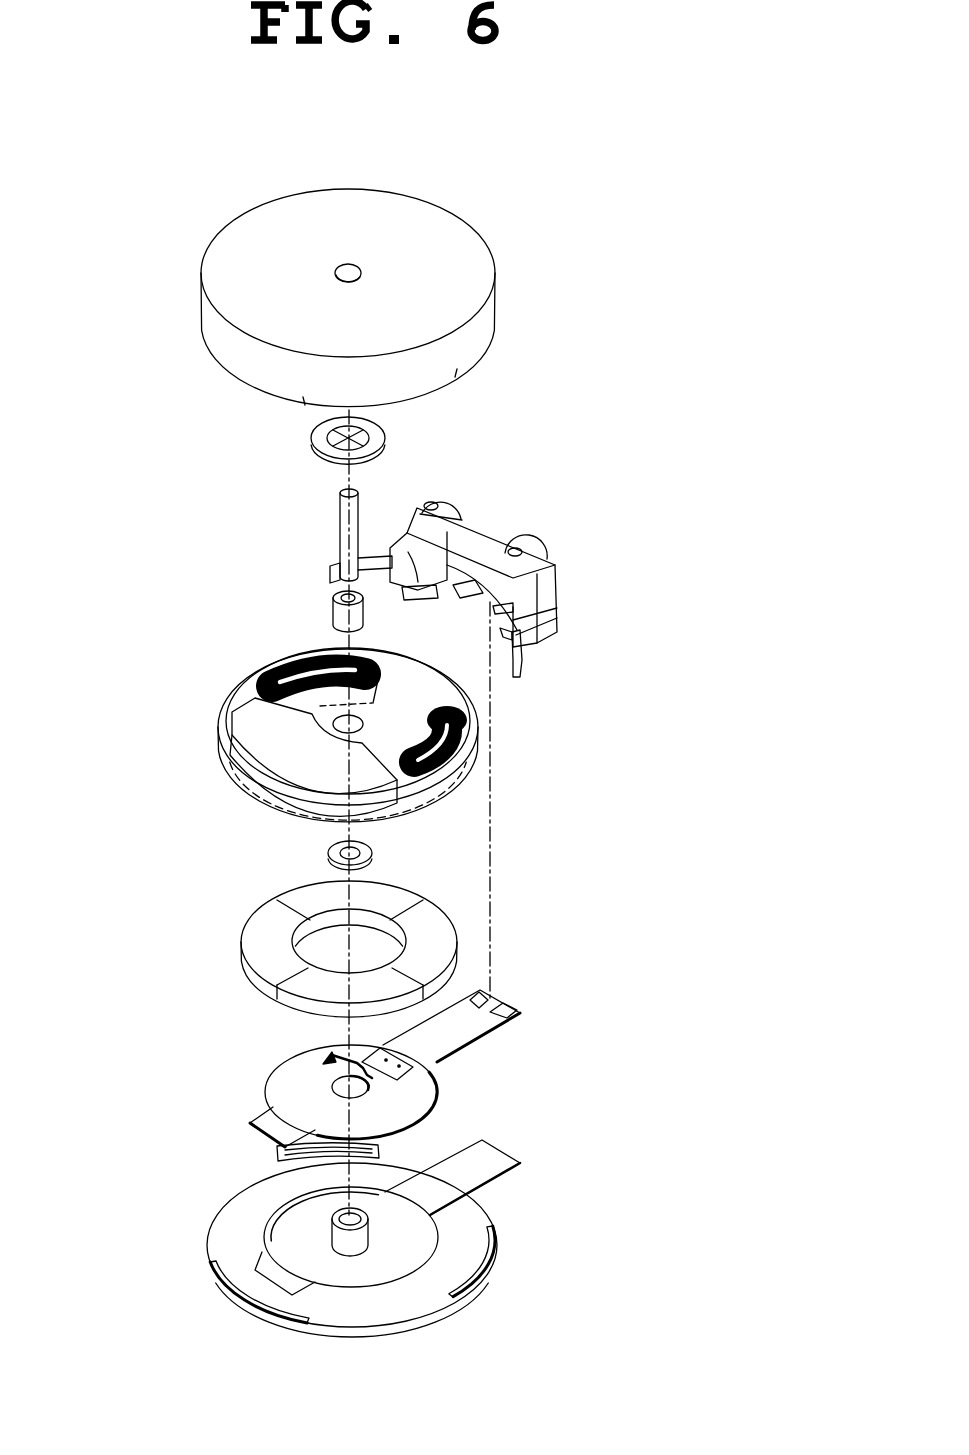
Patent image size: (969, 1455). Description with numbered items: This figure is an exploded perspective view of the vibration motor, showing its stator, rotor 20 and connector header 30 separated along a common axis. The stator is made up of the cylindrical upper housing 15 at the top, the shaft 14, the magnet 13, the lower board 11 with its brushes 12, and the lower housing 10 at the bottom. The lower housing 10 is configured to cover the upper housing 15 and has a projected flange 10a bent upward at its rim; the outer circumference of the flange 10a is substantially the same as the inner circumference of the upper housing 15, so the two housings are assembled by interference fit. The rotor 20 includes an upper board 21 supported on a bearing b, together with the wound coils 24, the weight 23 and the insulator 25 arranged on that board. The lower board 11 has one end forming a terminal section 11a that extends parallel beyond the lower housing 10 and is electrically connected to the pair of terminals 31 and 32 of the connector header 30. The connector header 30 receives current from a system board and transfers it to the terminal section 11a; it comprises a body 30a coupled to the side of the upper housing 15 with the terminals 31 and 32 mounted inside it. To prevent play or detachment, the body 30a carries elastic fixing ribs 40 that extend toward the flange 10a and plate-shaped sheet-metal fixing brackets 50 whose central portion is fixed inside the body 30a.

The upper housing 15 is at (483, 332).
The shaft 14 is at (343, 537).
The bearing b is at (333, 610).
The connector header 30 is at (549, 565).
The body 30a is at (557, 587).
The terminal 31 is at (538, 542).
The terminal 32 is at (440, 492).
The fixing rib 40 is at (418, 582).
The fixing bracket 50 is at (530, 665).
The rotor 20 is at (319, 781).
The upper board 21 is at (450, 807).
The weight 23 is at (238, 722).
The wound coils 24 is at (460, 750).
The insulator 25 is at (453, 690).
The magnet 13 is at (247, 928).
The lower board 11 is at (386, 1058).
The terminal section 11a is at (500, 1007).
The brushes 12 is at (330, 1058).
The lower housing 10 is at (336, 1238).
The projected flange 10a is at (370, 1230).